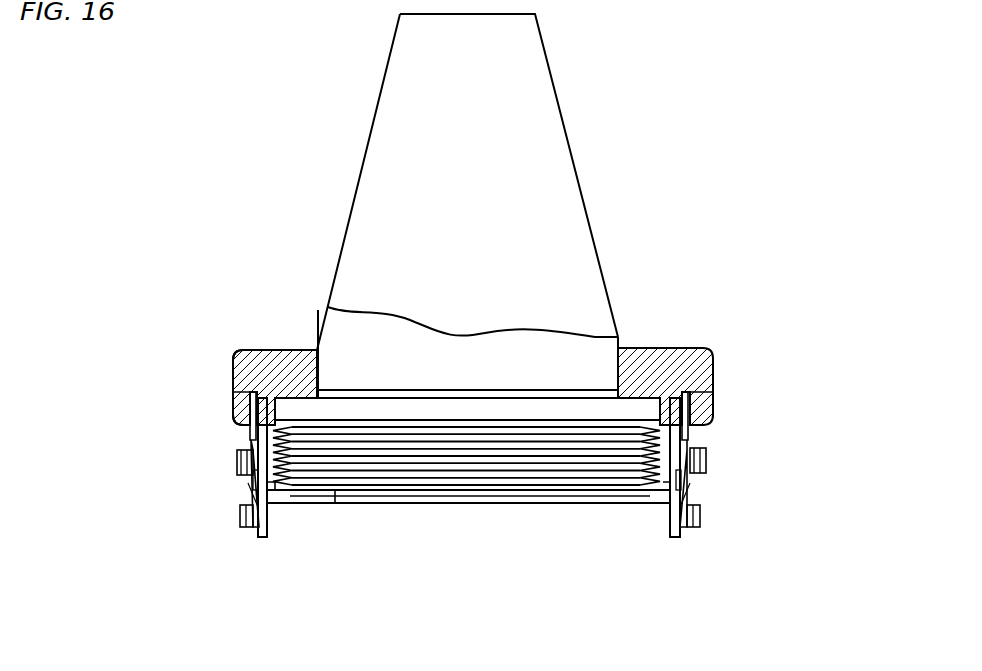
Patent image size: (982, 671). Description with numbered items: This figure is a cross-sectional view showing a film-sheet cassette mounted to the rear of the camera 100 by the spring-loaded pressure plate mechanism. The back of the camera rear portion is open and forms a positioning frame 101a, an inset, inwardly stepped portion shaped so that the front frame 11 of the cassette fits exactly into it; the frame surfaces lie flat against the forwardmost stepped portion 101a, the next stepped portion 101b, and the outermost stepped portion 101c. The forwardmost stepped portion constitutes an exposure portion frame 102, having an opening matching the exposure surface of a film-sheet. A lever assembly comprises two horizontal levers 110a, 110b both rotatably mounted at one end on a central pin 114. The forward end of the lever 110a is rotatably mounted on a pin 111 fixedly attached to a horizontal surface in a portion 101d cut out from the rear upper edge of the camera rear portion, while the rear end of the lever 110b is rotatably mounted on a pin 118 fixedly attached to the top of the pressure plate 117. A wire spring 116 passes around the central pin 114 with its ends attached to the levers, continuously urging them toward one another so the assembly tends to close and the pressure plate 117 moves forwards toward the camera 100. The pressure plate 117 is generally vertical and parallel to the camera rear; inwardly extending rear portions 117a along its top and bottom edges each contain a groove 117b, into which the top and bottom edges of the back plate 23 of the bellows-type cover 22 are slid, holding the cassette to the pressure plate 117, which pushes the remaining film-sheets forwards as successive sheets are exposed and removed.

The camera 100 is at (548, 96).
The positioning frame 101a is at (330, 322).
The next stepped portion 101b is at (304, 360).
The outermost stepped portion 101c is at (268, 385).
The cut-out portions 101d is at (242, 358).
The exposure portion frame 102 is at (478, 390).
The front frame 11 is at (565, 398).
The pins 111 is at (238, 390).
The horizontal lever 110a is at (249, 406).
The horizontal lever 110b is at (250, 500).
The pin 114 is at (240, 455).
The wire spring 116 is at (252, 488).
The pins 118 is at (244, 518).
The pressure plate 117 is at (436, 497).
The inwardly extending rear portions 117a is at (265, 537).
The groove 117b is at (268, 498).
The bellows-type cover 22 is at (340, 458).
The back plate 23 is at (502, 492).